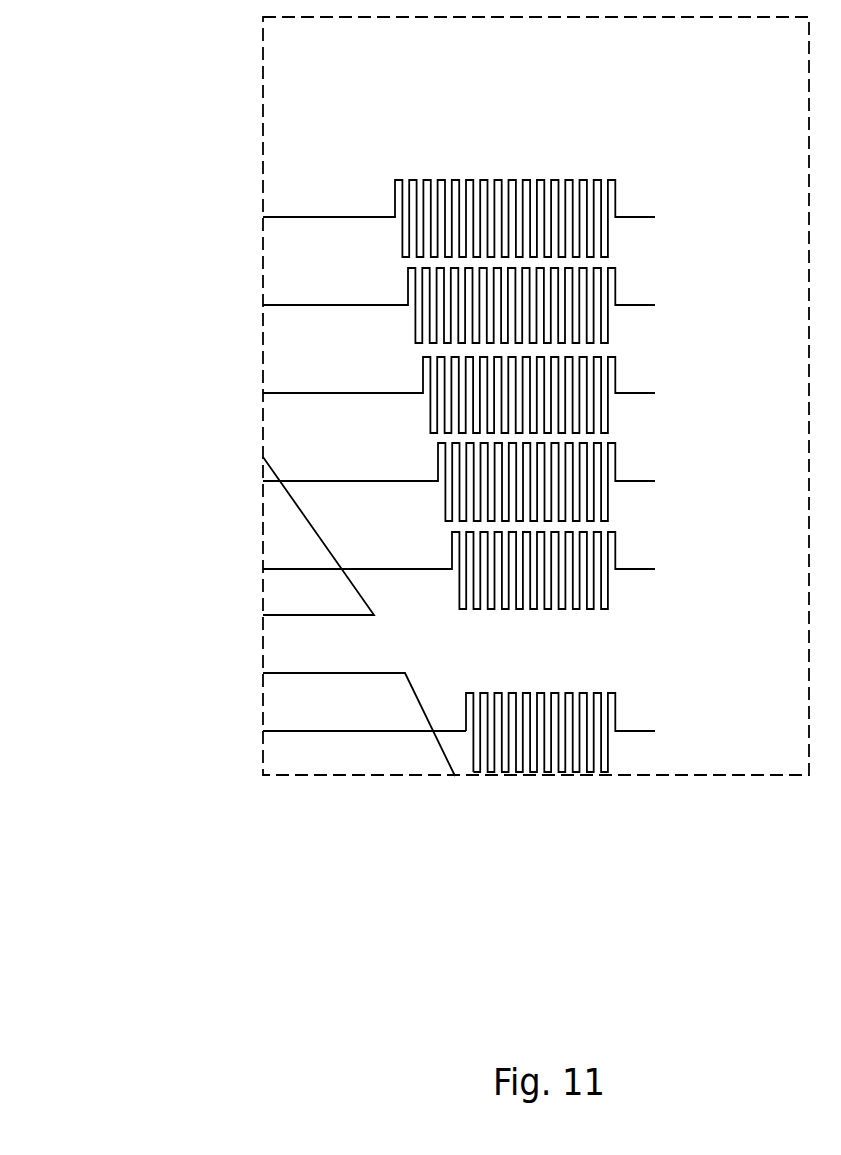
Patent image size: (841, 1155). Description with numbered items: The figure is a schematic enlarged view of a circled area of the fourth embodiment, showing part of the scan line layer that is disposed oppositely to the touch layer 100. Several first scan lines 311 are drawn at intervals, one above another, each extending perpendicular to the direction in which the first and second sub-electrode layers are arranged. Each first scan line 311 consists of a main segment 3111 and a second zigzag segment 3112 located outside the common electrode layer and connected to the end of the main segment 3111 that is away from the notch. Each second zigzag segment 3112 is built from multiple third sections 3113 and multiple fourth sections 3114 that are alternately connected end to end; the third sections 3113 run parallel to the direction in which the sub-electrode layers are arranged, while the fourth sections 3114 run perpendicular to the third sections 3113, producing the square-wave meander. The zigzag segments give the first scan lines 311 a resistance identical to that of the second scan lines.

The touch layer 100 is at (305, 706).
The first scan line 311 is at (459, 884).
The main segment 3111 is at (358, 731).
The second zigzag segment 3112 is at (529, 854).
The third section 3113 is at (467, 720).
The fourth section 3114 is at (474, 775).